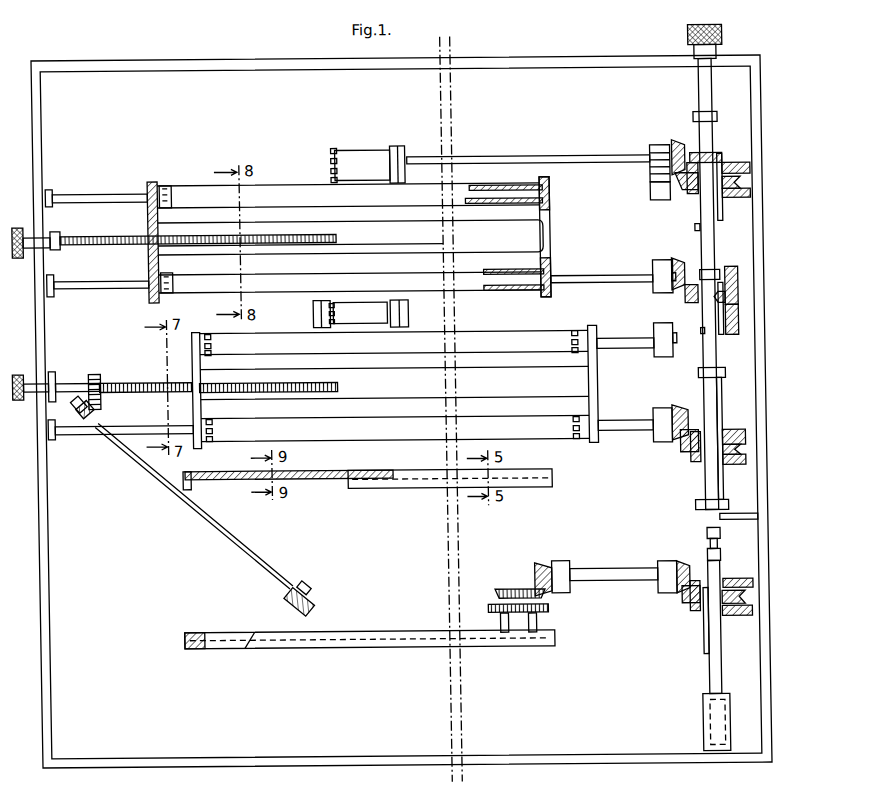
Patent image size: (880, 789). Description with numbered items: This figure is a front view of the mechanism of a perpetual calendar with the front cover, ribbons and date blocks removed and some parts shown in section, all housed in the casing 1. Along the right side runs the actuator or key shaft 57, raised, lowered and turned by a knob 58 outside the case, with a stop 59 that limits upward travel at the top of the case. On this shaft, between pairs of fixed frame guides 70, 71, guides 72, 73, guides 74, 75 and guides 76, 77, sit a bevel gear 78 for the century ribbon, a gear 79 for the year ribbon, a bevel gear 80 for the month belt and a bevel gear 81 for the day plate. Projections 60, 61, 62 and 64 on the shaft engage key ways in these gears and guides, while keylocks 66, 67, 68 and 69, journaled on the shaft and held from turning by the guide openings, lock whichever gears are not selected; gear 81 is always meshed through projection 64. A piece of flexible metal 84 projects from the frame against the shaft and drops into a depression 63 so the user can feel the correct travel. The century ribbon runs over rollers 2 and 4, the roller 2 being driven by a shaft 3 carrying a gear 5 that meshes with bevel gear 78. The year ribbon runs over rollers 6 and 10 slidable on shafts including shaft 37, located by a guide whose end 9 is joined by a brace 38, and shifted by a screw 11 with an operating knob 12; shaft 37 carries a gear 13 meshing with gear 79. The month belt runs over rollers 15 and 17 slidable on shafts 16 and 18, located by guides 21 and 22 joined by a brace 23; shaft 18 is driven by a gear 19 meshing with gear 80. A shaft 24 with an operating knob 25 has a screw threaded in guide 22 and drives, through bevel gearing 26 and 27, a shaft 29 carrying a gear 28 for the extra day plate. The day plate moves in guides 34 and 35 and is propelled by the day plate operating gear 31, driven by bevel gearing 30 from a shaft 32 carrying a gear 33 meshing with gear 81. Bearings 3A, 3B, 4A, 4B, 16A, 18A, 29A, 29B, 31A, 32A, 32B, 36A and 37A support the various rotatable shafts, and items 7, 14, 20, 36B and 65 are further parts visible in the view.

The casing 1 is at (493, 60).
The roller 2 is at (345, 158).
The shaft 3 is at (585, 160).
The bearing 3A is at (396, 160).
The bearing 3B is at (650, 165).
The roller 4 is at (365, 312).
The bearing 4A is at (310, 312).
The bearing 4B is at (398, 316).
The gear 5 is at (672, 152).
The roller 6 is at (490, 189).
The sleeve 7 is at (522, 189).
The guide end 9 is at (145, 215).
The roller 10 is at (330, 287).
The screw 11 is at (110, 245).
The operating knob 12 is at (14, 228).
The gear 13 is at (690, 278).
The clamp 14 is at (329, 155).
The roller 15 is at (515, 336).
The shaft 16 is at (605, 343).
The bearing 16A is at (650, 345).
The roller 17 is at (530, 445).
The shaft 18 is at (615, 438).
The bearing 18A is at (655, 447).
The gear 19 is at (672, 418).
The clamp 20 is at (572, 334).
The guide 21 is at (587, 400).
The guide 22 is at (208, 385).
The brace 23 is at (412, 381).
The shaft 24 is at (107, 385).
The operating knob 25 is at (25, 375).
The bevel gearing 26 is at (85, 378).
The bevel gearing 27 is at (76, 416).
The gear 28 is at (300, 597).
The shaft 29 is at (120, 455).
The bearing 29A is at (68, 407).
The bearing 29B is at (295, 586).
The bevel gearing 30 is at (530, 566).
The day plate operating gear 31 is at (500, 593).
The bearing 31A is at (528, 626).
The shaft 32 is at (605, 585).
The bearing 32A is at (553, 568).
The bearing 32B is at (650, 575).
The gear 33 is at (675, 580).
The guide 34 is at (548, 485).
The guide 35 is at (490, 652).
The bearing 36A is at (650, 196).
The plate 36B is at (548, 215).
The shaft 37 is at (125, 290).
The bearing 37A is at (660, 278).
The brace 38 is at (398, 240).
The actuator shaft 57 is at (698, 84).
The knob 58 is at (688, 42).
The stop 59 is at (692, 120).
The projection 60 is at (692, 228).
The projection 61 is at (697, 338).
The projection 62 is at (713, 440).
The depression 63 is at (702, 556).
The projection 64 is at (696, 630).
The foot block 65 is at (700, 715).
The keylock 66 is at (714, 158).
The keylock 67 is at (710, 264).
The keylock 68 is at (693, 383).
The key lock 69 is at (690, 508).
The guide 70 is at (748, 172).
The guide 71 is at (748, 199).
The guide 72 is at (734, 278).
The guide 73 is at (734, 330).
The guide 74 is at (740, 440).
The guide 75 is at (740, 468).
The guide 76 is at (742, 588).
The guide 77 is at (740, 618).
The bevel gear 78 is at (738, 188).
The gear 79 is at (722, 300).
The bevel gear 80 is at (734, 455).
The bevel gear 81 is at (736, 602).
The piece of flexible metal 84 is at (750, 522).